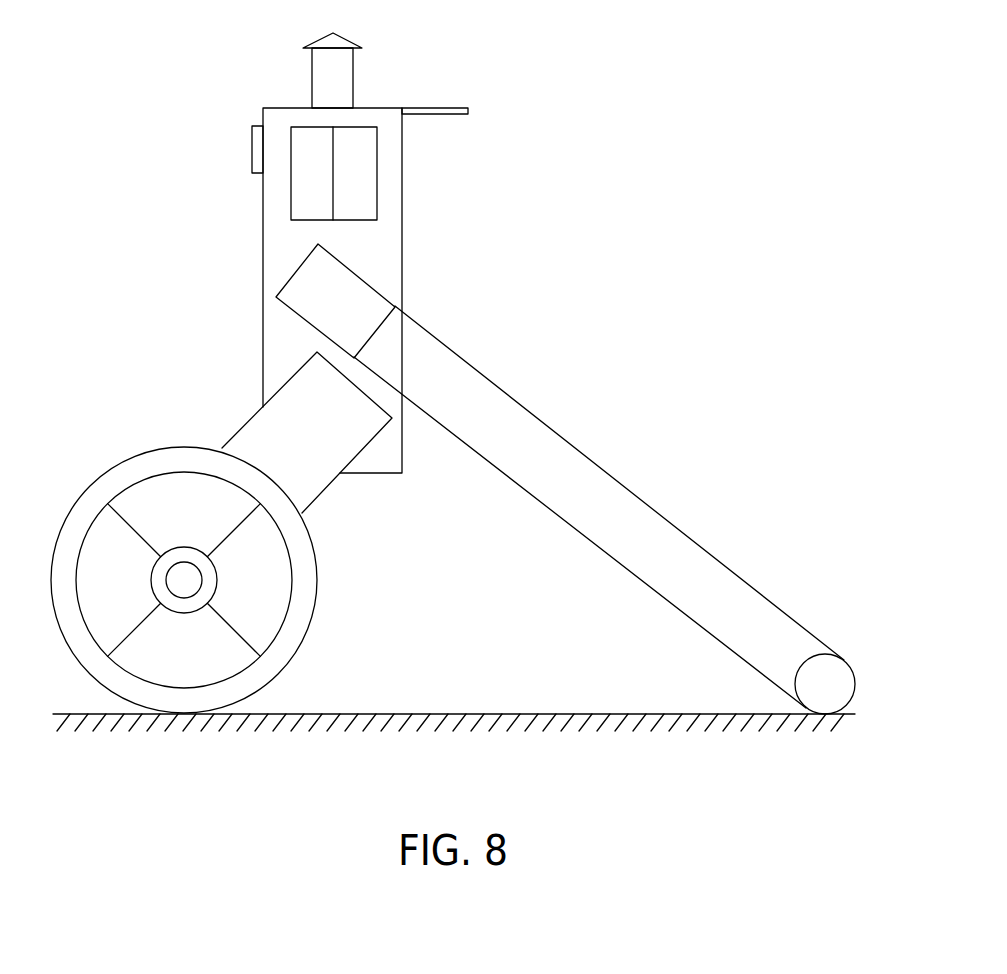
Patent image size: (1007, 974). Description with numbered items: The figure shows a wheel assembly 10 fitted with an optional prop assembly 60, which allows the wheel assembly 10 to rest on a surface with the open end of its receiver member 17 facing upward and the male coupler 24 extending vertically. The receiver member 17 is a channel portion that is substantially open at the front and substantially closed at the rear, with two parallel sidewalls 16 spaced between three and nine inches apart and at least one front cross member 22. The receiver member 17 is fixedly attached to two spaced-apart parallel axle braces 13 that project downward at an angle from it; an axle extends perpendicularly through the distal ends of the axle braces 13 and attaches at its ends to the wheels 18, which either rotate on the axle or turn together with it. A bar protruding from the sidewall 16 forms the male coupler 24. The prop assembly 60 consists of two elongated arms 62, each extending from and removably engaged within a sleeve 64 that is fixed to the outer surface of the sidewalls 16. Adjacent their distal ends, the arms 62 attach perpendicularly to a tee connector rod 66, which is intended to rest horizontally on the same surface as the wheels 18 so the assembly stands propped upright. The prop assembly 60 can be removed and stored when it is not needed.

The wheel assembly 10 is at (193, 408).
The axle brace 13 is at (332, 488).
The sidewall 16 is at (387, 232).
The receiver member 17 is at (238, 120).
The wheel 18 is at (280, 660).
The front cross member 22 is at (460, 107).
The male coupler 24 is at (347, 75).
The prop assembly 60 is at (500, 353).
The elongated arm 62 is at (563, 458).
The sleeve 64 is at (382, 292).
The tee connector rod 66 is at (822, 683).